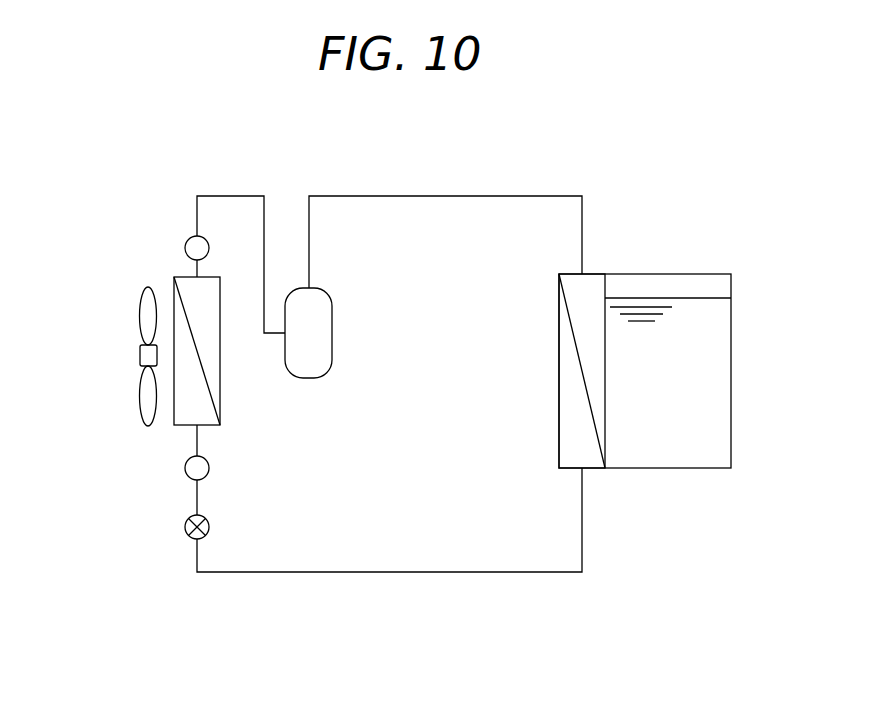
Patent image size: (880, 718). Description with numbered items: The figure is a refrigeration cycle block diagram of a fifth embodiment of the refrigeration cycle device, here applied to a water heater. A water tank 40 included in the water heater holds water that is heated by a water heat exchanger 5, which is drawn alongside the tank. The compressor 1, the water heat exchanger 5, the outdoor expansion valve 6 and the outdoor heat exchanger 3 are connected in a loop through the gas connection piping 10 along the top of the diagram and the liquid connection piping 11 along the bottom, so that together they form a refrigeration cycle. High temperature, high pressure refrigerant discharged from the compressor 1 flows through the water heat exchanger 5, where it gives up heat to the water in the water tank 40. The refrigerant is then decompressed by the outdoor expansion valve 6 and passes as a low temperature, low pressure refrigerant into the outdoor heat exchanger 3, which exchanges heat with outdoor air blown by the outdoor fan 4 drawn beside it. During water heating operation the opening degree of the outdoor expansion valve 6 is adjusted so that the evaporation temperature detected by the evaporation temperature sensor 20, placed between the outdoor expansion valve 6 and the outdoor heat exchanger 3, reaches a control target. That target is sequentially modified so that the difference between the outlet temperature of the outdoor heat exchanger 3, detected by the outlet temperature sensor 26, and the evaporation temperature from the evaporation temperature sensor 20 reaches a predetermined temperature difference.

The compressor 1 is at (332, 360).
The outdoor heat exchanger 3 is at (220, 390).
The outdoor fan 4 is at (140, 312).
The water heat exchanger 5 is at (559, 342).
The outdoor expansion valve 6 is at (185, 525).
The gas connection piping 10 is at (443, 196).
The liquid connection piping 11 is at (418, 572).
The evaporation temperature sensor 20 is at (184, 466).
The outlet temperature sensor 26 is at (186, 246).
The water tank 40 is at (687, 468).